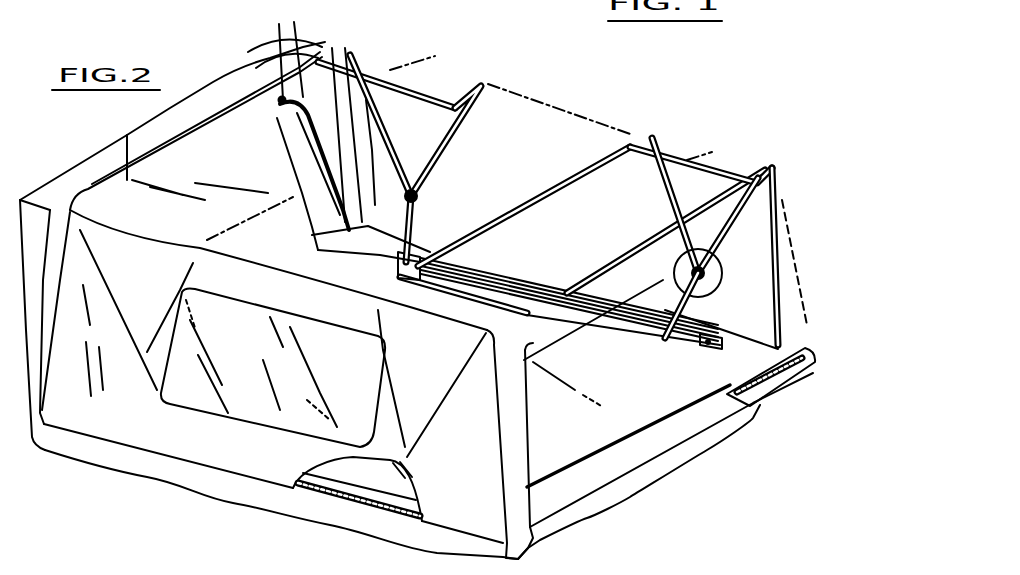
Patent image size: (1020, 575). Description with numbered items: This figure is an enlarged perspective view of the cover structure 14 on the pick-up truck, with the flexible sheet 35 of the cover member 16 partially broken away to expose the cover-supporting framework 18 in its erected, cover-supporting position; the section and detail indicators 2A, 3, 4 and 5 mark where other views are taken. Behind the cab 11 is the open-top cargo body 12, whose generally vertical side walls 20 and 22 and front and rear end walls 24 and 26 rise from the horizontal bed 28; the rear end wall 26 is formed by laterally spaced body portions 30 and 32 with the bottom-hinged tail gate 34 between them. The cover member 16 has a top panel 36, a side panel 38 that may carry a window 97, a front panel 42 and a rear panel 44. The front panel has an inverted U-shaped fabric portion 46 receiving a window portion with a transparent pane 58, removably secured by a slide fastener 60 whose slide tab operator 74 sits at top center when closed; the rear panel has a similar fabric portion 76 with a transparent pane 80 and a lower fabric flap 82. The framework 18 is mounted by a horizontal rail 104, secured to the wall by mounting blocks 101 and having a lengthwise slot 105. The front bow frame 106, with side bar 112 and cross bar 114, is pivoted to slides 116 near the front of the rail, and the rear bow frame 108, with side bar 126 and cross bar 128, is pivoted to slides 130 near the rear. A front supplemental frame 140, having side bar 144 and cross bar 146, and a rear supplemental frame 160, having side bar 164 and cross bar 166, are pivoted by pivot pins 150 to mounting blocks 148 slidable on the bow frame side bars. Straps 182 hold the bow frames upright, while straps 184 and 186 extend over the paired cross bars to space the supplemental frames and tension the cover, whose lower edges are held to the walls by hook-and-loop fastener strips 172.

The cab 11 is at (189, 104).
The cargo body 12 is at (118, 476).
The cover structure 14 is at (748, 120).
The cover member 16 is at (787, 172).
The cover-supporting framework 18 is at (490, 106).
The side wall 20 is at (210, 487).
The side wall 22 is at (527, 271).
The front end wall 24 is at (340, 264).
The rear end wall 26 is at (780, 403).
The bed 28 is at (735, 345).
The body portion 30 is at (518, 556).
The body portion 32 is at (805, 366).
The tail gate 34 is at (693, 450).
The sheet 35 is at (535, 112).
The top panel 36 is at (127, 136).
The side panel 38 is at (105, 404).
The front panel 42 is at (282, 50).
The rear panel 44 is at (505, 365).
The fabric portion 46 is at (308, 40).
The transparent pane 58 is at (297, 133).
The slide fastener 60 is at (280, 97).
The slide tab operator 74 is at (312, 237).
The fabric portion 76 is at (507, 434).
The transparent pane 80 is at (543, 441).
The flap 82 is at (627, 462).
The window 97 is at (217, 341).
The mounting block 101 is at (628, 436).
The rail 104 is at (486, 258).
The slot 105 is at (610, 347).
The front bow frame 106 is at (362, 52).
The rear bow frame 108 is at (621, 250).
The side bar 112 is at (420, 80).
The cross bar 114 is at (334, 36).
The slide 116 is at (428, 258).
The side bar 126 is at (778, 208).
The cross bar 128 is at (707, 183).
The slide 130 is at (692, 356).
The supplemental frame 140 is at (490, 80).
The side bar 144 is at (462, 124).
The cross bar 146 is at (410, 125).
The mounting block 148 is at (718, 285).
The pivot pin 150 is at (418, 197).
The rear supplemental frame 160 is at (643, 130).
The side bar 164 is at (657, 136).
The cross bar 166 is at (496, 216).
The fastener strip 172 is at (342, 500).
The strap 182 is at (784, 263).
The strap 184 is at (377, 63).
The strap 186 is at (673, 163).
The section view indicator 2A is at (598, 160).
The detail view indicator 3 is at (722, 268).
The section view indicator 4 is at (632, 292).
The section view indicator 5 is at (811, 330).